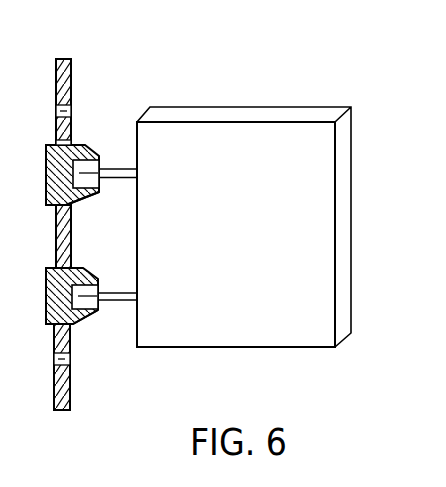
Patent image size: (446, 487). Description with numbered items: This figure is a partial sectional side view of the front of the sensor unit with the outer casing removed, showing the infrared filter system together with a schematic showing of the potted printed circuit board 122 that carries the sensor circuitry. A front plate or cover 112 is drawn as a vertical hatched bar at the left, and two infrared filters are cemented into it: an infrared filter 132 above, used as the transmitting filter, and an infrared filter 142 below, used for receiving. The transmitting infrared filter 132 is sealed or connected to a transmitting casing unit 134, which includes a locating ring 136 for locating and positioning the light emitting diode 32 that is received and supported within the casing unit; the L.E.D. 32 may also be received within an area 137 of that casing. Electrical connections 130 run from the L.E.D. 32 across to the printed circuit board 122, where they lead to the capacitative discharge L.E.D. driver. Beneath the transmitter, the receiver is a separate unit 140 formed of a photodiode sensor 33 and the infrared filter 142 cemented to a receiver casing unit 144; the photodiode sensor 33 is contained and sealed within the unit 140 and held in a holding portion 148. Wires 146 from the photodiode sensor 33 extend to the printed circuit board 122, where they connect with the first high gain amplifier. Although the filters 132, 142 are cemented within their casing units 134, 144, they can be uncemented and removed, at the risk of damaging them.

The cover 112 is at (56, 85).
The transmitting casing unit 134 is at (78, 135).
The light emitting diode 32 is at (88, 150).
The infrared filter 132 is at (45, 173).
The locating ring 136 is at (73, 206).
The electrical connections 130 is at (115, 178).
The area 137 is at (97, 196).
The wires 146 is at (115, 292).
The infrared filter 142 is at (45, 297).
The unit 140 is at (38, 312).
The photodiode sensor 33 is at (82, 325).
The holding portion 148 is at (75, 326).
The receiver casing unit 144 is at (54, 391).
The printed circuit board 122 is at (323, 225).